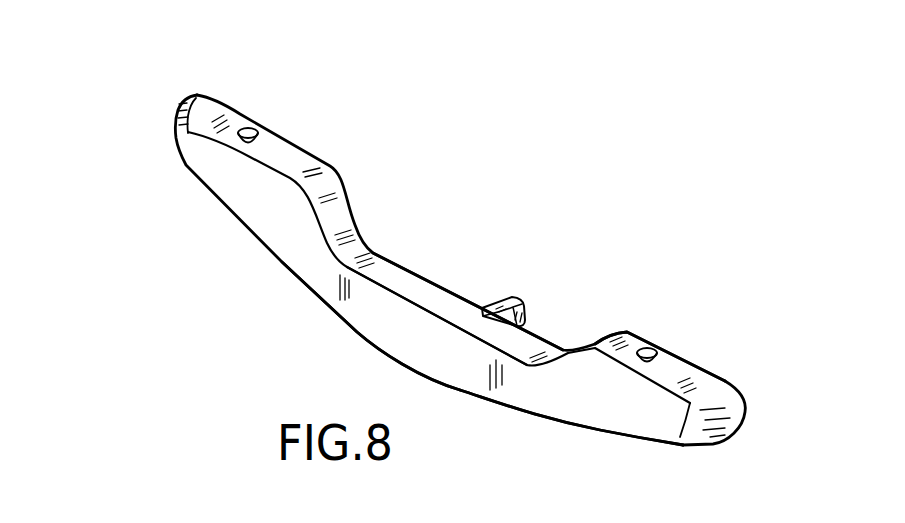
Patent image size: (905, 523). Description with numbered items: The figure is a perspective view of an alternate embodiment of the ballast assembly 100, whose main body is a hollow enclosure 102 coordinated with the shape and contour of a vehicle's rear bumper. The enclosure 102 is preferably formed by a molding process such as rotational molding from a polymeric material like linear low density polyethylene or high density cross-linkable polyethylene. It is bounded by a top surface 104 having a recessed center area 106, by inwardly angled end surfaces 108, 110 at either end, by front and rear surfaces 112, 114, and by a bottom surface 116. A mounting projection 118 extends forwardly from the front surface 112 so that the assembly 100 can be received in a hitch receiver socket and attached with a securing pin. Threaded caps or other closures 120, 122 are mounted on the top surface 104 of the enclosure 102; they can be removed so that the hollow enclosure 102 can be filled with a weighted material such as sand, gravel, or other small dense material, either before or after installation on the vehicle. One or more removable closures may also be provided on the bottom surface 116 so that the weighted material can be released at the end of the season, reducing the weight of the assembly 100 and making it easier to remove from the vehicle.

The ballast assembly 100 is at (632, 228).
The hollow enclosure 102 is at (330, 165).
The top surface 104 is at (278, 157).
The recessed center area 106 is at (383, 272).
The inwardly angled end surface 108 is at (178, 143).
The inwardly angled end surface 110 is at (750, 413).
The front surface 112 is at (627, 331).
The rear surface 114 is at (545, 388).
The bottom surface 116 is at (387, 353).
The mounting projection 118 is at (503, 295).
The threaded cap 120 is at (253, 124).
The threaded cap 122 is at (658, 345).